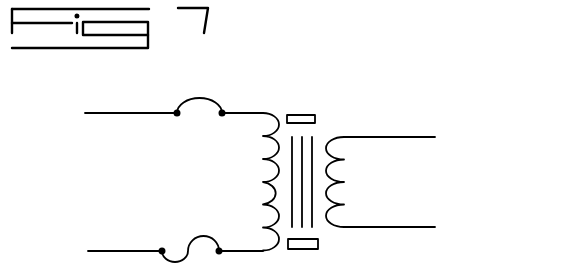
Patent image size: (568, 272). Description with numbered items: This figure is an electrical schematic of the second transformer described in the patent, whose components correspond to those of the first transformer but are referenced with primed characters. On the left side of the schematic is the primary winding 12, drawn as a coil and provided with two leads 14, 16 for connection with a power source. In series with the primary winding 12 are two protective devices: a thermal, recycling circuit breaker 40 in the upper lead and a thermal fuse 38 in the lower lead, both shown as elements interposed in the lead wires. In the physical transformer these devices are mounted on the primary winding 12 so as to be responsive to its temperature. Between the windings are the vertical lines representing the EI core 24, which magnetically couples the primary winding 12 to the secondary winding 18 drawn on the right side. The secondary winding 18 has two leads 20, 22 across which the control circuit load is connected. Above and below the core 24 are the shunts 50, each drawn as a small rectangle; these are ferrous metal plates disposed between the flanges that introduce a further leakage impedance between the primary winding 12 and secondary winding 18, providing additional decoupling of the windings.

The primary winding lead 14 is at (122, 113).
The thermal recycling circuit breaker 40 is at (193, 100).
The primary winding 12 is at (263, 158).
The primary winding lead 16 is at (110, 251).
The thermal fuse 38 is at (205, 236).
The shunts 50 is at (298, 115).
The EI core 24 is at (315, 138).
The secondary winding 18 is at (342, 160).
The secondary winding lead 20 is at (412, 137).
The secondary winding lead 22 is at (398, 227).